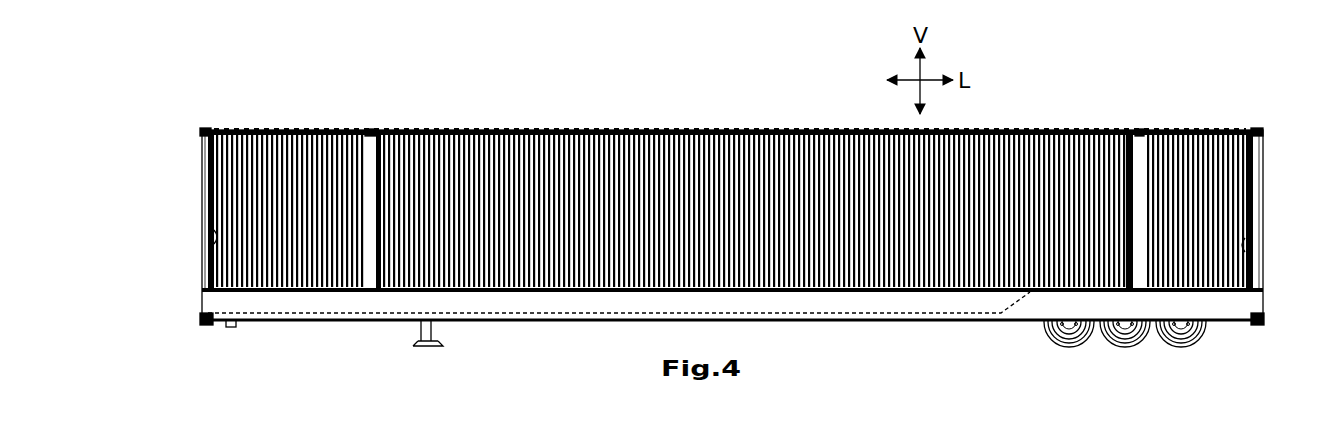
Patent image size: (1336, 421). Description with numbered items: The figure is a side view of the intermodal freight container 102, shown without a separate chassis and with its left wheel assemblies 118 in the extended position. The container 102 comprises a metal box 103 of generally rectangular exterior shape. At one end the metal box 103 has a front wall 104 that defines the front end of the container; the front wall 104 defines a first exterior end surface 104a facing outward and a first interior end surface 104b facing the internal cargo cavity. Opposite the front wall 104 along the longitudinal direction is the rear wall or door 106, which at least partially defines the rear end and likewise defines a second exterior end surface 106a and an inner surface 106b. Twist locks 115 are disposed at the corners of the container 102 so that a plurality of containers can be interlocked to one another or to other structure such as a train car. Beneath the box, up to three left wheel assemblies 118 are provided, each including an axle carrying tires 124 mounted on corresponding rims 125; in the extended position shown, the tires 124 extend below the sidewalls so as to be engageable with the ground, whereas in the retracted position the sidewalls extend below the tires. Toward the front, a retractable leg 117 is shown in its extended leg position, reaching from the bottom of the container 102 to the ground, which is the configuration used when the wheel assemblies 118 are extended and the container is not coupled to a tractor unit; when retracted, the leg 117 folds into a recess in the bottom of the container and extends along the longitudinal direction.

The intermodal freight container 102 is at (723, 82).
The metal box 103 is at (574, 122).
The front wall 104 is at (200, 162).
The first exterior end surface 104a is at (194, 193).
The first interior end surface 104b is at (208, 233).
The rear wall or door 106 is at (1248, 160).
The second exterior end surface 106a is at (1255, 186).
The second interior end surface 106b is at (1237, 243).
The twist locks 115 is at (198, 120).
The retractable leg 117 is at (425, 338).
The left wheel assembly 118 is at (1080, 342).
The tire 124 is at (1058, 337).
The rim 125 is at (1053, 316).